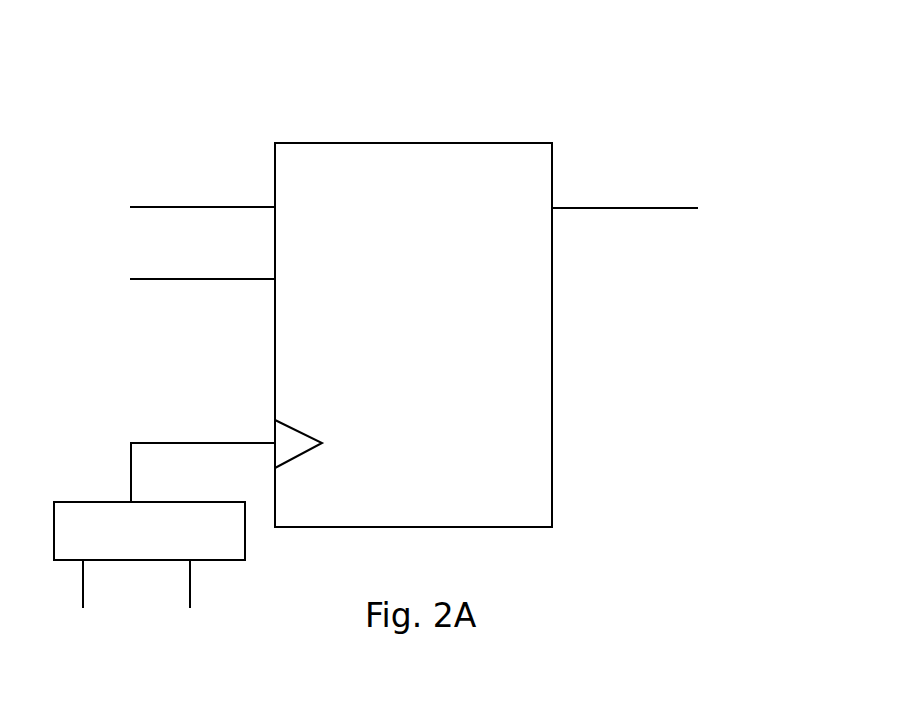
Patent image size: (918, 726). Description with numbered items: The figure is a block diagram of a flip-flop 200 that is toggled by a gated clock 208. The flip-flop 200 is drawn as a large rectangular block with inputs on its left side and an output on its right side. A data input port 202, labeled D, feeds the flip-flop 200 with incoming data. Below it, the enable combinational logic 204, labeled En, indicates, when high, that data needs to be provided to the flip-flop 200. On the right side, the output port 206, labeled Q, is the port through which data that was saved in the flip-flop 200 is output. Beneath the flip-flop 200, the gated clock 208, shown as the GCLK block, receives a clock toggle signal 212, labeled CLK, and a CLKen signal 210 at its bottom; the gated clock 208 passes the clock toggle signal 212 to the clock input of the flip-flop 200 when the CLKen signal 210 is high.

The flip-flop 200 is at (686, 299).
The data input port 202 is at (224, 207).
The enable combinational logic 204 is at (207, 279).
The output port 206 is at (609, 208).
The gated clock 208 is at (107, 502).
The CLKen signal 210 is at (190, 595).
The clock toggle signal 212 is at (83, 581).